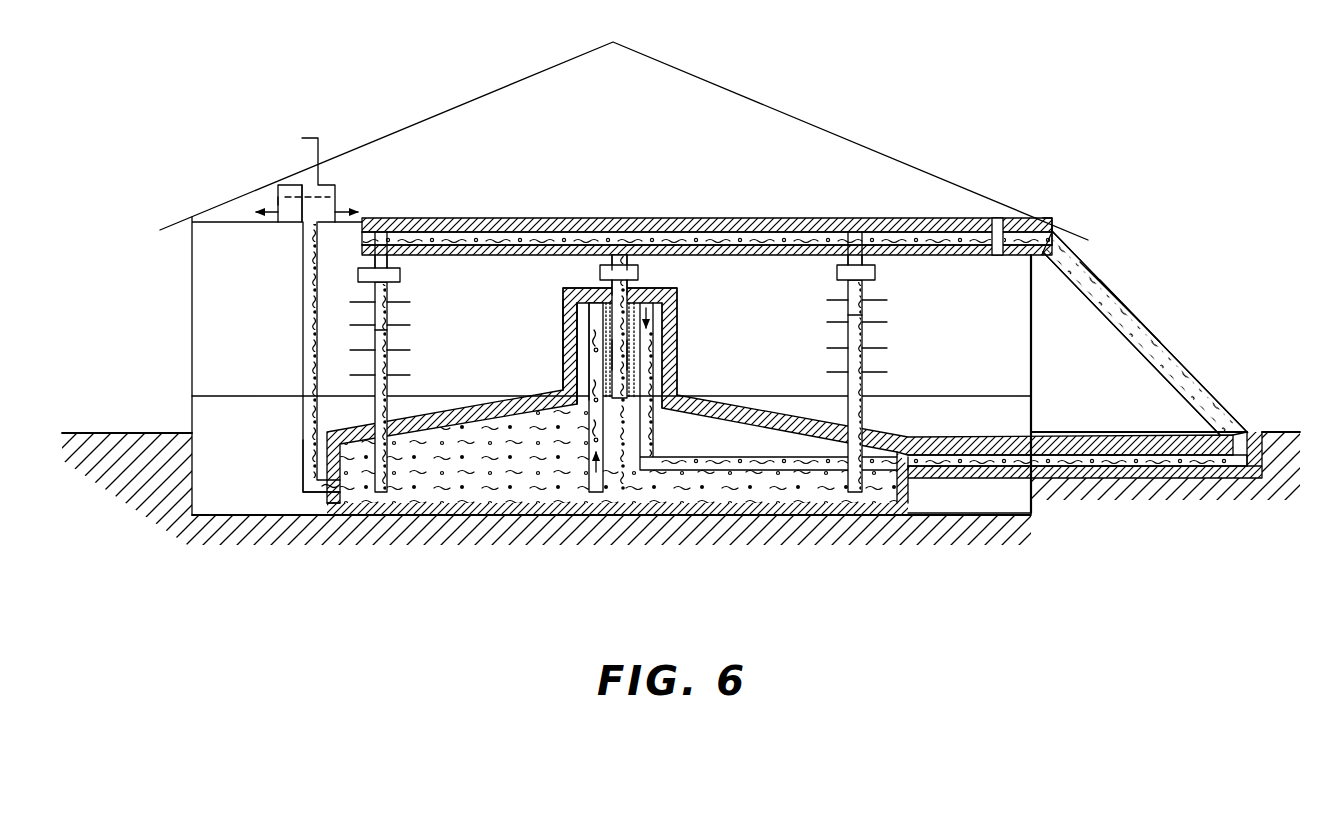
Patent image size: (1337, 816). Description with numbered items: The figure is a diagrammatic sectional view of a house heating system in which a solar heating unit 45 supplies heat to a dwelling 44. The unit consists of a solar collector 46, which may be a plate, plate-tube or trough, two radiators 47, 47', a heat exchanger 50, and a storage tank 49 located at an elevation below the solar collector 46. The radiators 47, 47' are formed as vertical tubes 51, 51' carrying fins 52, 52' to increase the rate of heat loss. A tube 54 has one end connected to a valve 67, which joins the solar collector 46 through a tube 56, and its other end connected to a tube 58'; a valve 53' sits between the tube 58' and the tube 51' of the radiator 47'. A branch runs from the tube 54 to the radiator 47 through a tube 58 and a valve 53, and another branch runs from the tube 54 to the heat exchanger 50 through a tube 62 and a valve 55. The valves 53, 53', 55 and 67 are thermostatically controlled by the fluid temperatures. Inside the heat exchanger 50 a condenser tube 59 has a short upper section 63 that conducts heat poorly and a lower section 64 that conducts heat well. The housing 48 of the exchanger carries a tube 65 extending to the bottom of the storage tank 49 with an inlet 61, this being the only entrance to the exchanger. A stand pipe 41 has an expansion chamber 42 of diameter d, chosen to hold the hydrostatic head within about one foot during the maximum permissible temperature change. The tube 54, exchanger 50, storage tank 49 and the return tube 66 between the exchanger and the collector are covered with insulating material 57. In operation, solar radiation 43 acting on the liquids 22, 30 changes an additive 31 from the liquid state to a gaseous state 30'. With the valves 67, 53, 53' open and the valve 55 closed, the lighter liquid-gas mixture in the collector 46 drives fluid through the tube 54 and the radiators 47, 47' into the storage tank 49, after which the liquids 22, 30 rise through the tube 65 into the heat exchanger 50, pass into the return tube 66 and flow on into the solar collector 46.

The liquid 22 is at (1244, 414).
The liquid 30 is at (760, 402).
The gaseous state 30' is at (1178, 331).
The additive 31 is at (1107, 468).
The stand pipe 41 is at (302, 458).
The expansion chamber 42 is at (280, 187).
The solar radiation 43 is at (1134, 297).
The dwelling 44 is at (769, 102).
The solar heating unit 45 is at (1108, 229).
The solar collector 46 is at (1143, 324).
The radiator 47 is at (893, 303).
The radiator 47' is at (312, 342).
The housing 48 is at (563, 339).
The storage tank 49 is at (488, 481).
The heat exchanger 50 is at (548, 312).
The vertical tube 51 is at (823, 373).
The vertical tube 51' is at (420, 373).
The fins 52 is at (837, 336).
The fins 52' is at (366, 337).
The valve 53 is at (884, 273).
The valve 53' is at (360, 260).
The tube 54 is at (918, 238).
The valve 55 is at (600, 270).
The tube 56 is at (1040, 231).
The insulating material 57 is at (874, 223).
The tube 58 is at (823, 256).
The tube 58' is at (374, 227).
The condenser tube 59 is at (604, 358).
The inlet 61 is at (595, 497).
The tube 62 is at (628, 261).
The upper section 63 is at (628, 286).
The lower section 64 is at (629, 356).
The tube 65 is at (607, 492).
The return tube 66 is at (705, 468).
The valve 67 is at (999, 224).
The diameter d is at (341, 206).